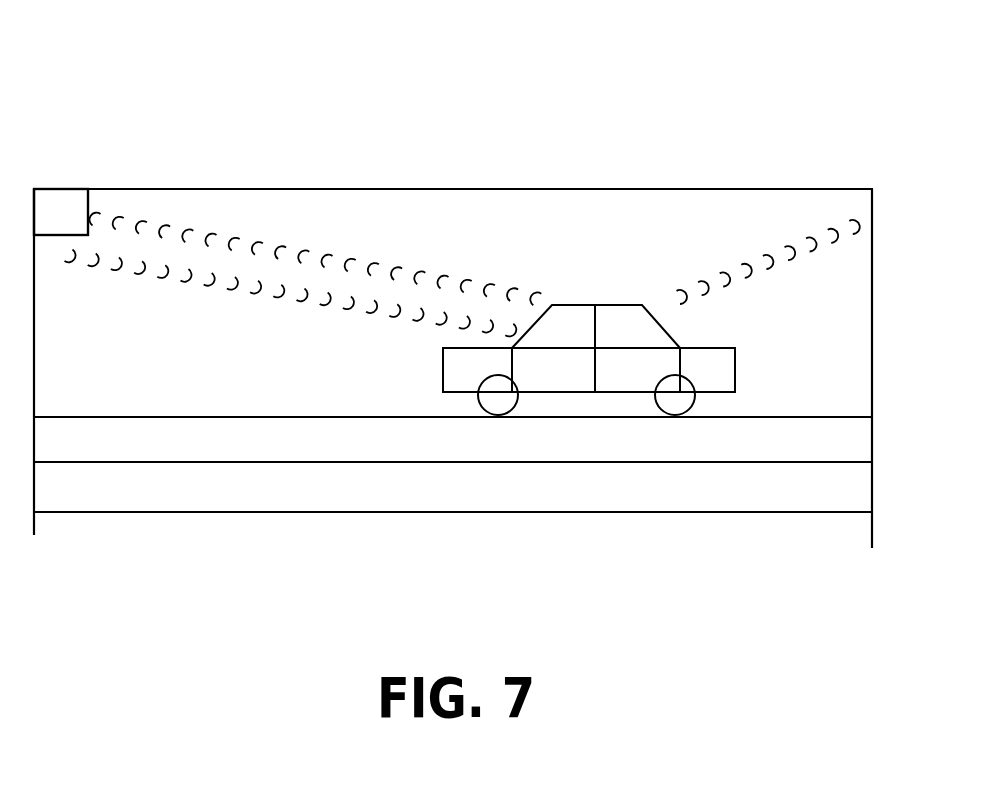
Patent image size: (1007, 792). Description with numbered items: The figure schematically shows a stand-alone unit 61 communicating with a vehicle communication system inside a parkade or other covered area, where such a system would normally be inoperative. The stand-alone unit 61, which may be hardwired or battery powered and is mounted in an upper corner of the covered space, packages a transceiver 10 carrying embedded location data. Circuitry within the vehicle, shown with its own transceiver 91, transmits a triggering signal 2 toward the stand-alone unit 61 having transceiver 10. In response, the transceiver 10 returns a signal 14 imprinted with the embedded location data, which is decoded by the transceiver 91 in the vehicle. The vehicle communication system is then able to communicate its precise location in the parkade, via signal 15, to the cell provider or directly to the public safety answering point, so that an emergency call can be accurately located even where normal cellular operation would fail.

The transceiver 10 is at (73, 222).
The stand-alone unit 61 is at (57, 212).
The triggering signal 2 is at (378, 259).
The signal 14 is at (257, 297).
The signal 15 is at (759, 255).
The first transceiver 91 is at (575, 313).